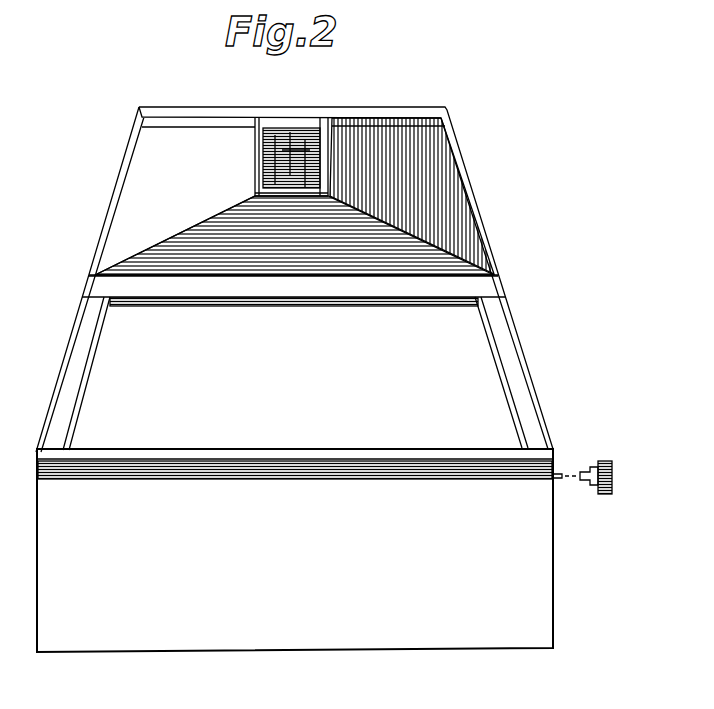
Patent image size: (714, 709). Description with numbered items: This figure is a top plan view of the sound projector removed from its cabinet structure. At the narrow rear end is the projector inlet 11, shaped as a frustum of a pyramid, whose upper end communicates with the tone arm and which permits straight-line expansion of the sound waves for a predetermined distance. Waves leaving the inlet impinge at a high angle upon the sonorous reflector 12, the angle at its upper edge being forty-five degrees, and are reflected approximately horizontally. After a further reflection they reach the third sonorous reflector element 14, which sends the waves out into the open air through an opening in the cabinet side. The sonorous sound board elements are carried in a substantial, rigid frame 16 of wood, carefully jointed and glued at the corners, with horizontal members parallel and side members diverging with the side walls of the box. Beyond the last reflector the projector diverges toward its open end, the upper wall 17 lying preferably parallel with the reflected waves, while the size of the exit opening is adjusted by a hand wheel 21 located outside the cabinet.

The projector inlet 11 is at (177, 196).
The sonorous reflector 12 is at (300, 135).
The third sonorous reflector element 14 is at (295, 323).
The rigid frame 16 is at (140, 287).
The upper wall 17 is at (295, 550).
The hand wheel 21 is at (612, 475).